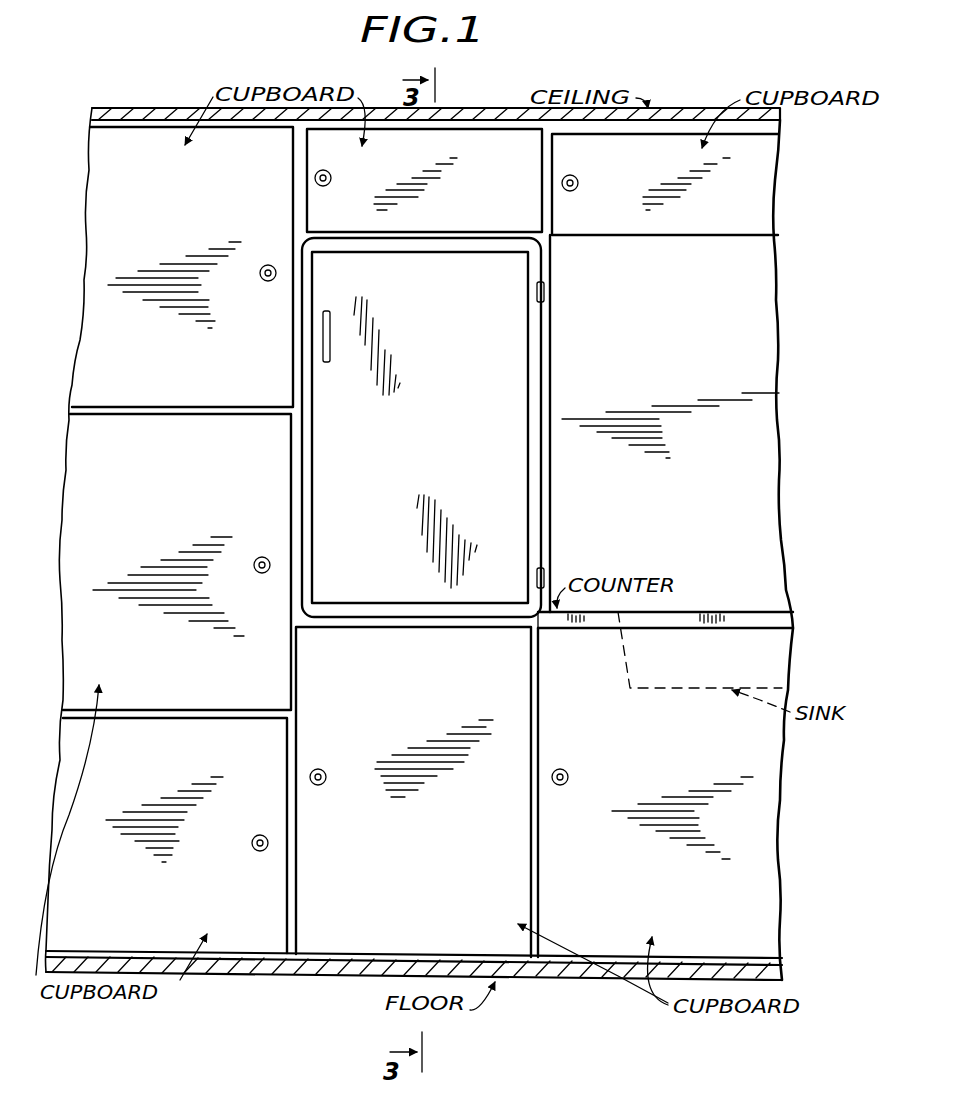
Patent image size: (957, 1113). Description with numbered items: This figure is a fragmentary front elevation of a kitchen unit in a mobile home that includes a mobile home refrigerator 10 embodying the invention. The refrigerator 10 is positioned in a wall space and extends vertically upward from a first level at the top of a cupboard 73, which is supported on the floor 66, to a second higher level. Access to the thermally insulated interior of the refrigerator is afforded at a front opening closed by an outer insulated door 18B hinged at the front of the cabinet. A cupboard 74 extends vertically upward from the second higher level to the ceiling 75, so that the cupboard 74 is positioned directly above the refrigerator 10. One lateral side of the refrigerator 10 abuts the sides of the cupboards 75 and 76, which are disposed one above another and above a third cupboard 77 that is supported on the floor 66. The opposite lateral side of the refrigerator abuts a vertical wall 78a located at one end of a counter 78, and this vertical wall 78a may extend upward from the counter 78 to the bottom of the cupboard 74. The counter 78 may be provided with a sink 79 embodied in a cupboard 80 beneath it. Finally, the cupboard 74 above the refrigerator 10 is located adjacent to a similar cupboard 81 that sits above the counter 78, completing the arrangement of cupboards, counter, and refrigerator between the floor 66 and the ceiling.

The mobile home refrigerator 10 is at (548, 357).
The outer insulated door 18B is at (446, 449).
The floor 66 is at (294, 976).
The cupboard 73 is at (420, 887).
The cupboard 74 is at (492, 208).
The ceiling / cupboard 75 is at (194, 367).
The cupboard 76 is at (173, 517).
The third cupboard 77 is at (196, 905).
The counter 78 is at (770, 612).
The vertical wall 78a is at (552, 513).
The sink 79 is at (634, 692).
The cupboard 80 is at (620, 887).
The cupboard 81 is at (713, 222).